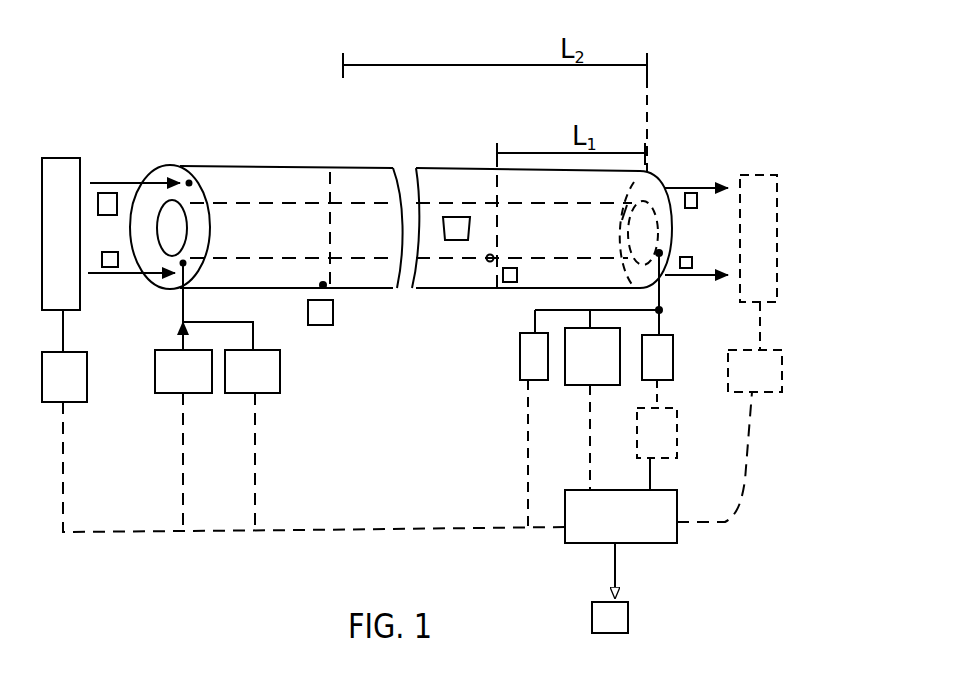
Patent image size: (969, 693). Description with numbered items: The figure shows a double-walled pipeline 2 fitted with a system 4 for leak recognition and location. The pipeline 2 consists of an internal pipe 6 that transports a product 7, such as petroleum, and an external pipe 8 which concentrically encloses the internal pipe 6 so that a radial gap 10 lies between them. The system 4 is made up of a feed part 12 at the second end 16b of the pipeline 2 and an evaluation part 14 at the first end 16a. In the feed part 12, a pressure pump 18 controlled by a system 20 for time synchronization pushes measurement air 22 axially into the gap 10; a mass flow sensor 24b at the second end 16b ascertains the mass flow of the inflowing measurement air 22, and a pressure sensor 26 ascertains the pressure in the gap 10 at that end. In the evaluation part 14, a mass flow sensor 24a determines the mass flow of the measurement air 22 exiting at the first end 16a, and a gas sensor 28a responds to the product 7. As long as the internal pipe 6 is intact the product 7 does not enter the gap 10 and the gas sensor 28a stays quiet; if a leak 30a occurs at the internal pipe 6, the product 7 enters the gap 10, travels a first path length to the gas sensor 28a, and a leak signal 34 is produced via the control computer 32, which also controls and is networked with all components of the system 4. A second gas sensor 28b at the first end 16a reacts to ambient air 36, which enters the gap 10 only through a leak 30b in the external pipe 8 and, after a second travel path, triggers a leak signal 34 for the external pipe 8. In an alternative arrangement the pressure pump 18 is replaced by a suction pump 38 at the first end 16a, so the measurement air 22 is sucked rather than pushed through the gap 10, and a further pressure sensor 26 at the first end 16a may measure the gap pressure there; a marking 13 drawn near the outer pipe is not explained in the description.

The pipeline 2 is at (493, 138).
The system 4 is at (220, 591).
The internal pipe 6 is at (196, 198).
The product 7 is at (457, 217).
The external pipe 8 is at (318, 166).
The gap 10 is at (208, 202).
The feed part 12 is at (324, 446).
The marker 13 is at (353, 281).
The evaluation part 14 is at (486, 400).
The first end 16a is at (661, 122).
The second end 16b is at (157, 124).
The pressure pump 18 is at (63, 158).
The system for time synchronization 20 is at (82, 376).
The measurement air 22 is at (118, 252).
The mass flow sensor 24a is at (587, 400).
The mass flow sensor 24b is at (165, 400).
The pressure sensor 26 is at (272, 395).
The gas sensor 28a is at (667, 362).
The second gas sensor 28b is at (670, 446).
The leak 30a is at (490, 261).
The leak 30b is at (336, 290).
The control computer 32 is at (582, 530).
The leak signal 34 is at (612, 622).
The ambient air 36 is at (357, 287).
The suction pump 38 is at (767, 258).